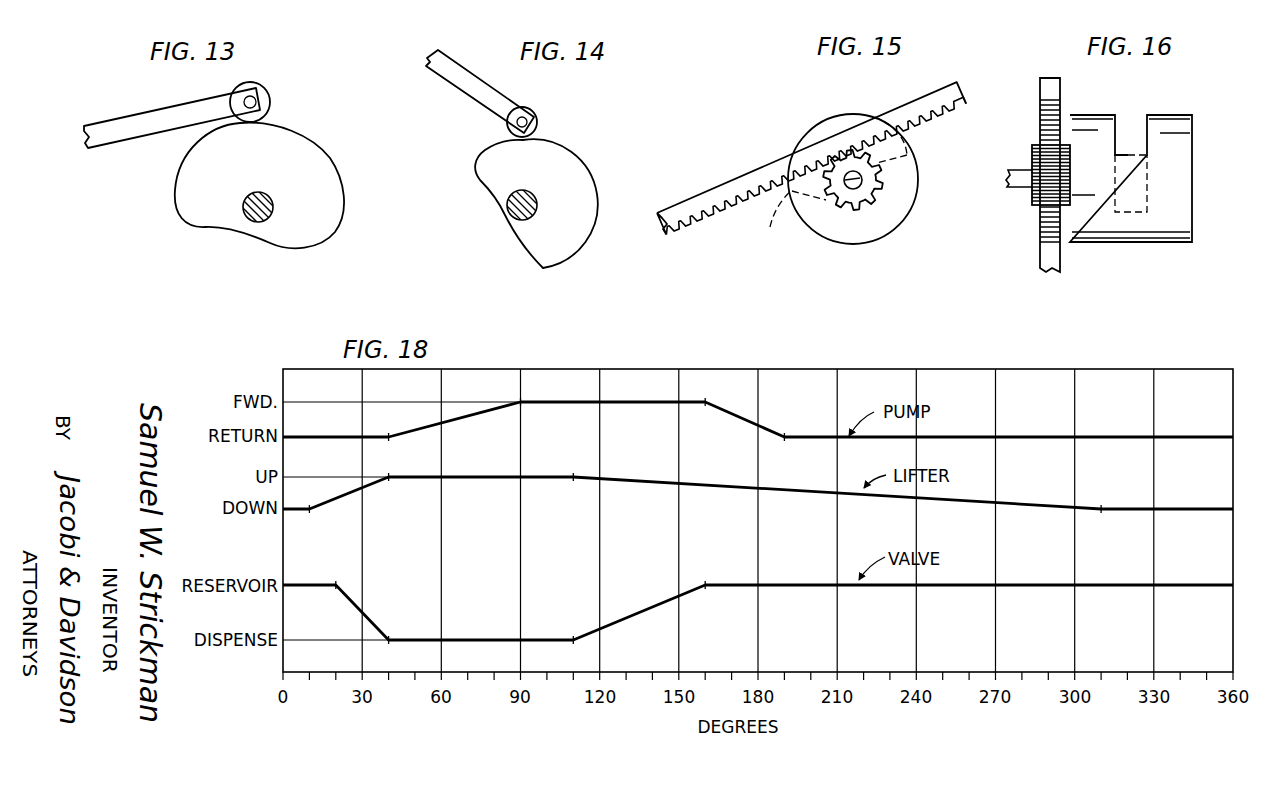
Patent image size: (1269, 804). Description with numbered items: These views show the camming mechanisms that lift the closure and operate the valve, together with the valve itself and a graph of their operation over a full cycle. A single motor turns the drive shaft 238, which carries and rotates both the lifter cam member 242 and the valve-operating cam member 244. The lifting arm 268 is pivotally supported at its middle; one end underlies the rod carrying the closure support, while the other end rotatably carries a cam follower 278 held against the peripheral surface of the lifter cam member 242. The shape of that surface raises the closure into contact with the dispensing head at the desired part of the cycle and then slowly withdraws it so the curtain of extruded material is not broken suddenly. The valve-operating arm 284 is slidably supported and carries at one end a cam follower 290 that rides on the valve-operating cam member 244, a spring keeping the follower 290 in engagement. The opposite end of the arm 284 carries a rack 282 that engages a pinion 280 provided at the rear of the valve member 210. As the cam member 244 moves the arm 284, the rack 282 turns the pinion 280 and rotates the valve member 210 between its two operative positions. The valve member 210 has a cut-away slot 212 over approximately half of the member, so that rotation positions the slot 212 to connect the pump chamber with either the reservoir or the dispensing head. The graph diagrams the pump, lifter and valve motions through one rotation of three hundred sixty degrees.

In FIG. 13, the lifting arm 268 is at (125, 121).
In FIG. 13, the cam follower 278 is at (270, 97).
In FIG. 13, the lifter cam member 242 is at (322, 160).
In FIG. 13, the drive shaft 238 is at (268, 196).
In FIG. 14, the drive shaft 238 is at (538, 203).
In FIG. 14, the valve-operating arm 284 is at (471, 92).
In FIG. 15, the valve-operating arm 284 is at (746, 177).
In FIG. 16, the valve-operating arm 284 is at (1048, 258).
In FIG. 14, the cam follower 290 is at (540, 112).
In FIG. 14, the valve-operating cam member 244 is at (562, 163).
In FIG. 15, the rack 282 is at (922, 127).
In FIG. 15, the pinion 280 is at (873, 200).
In FIG. 16, the pinion 280 is at (1032, 196).
In FIG. 15, the slot 212 is at (822, 182).
In FIG. 16, the slot 212 is at (1146, 115).
In FIG. 15, the valve member 210 is at (868, 237).
In FIG. 16, the valve member 210 is at (1197, 130).